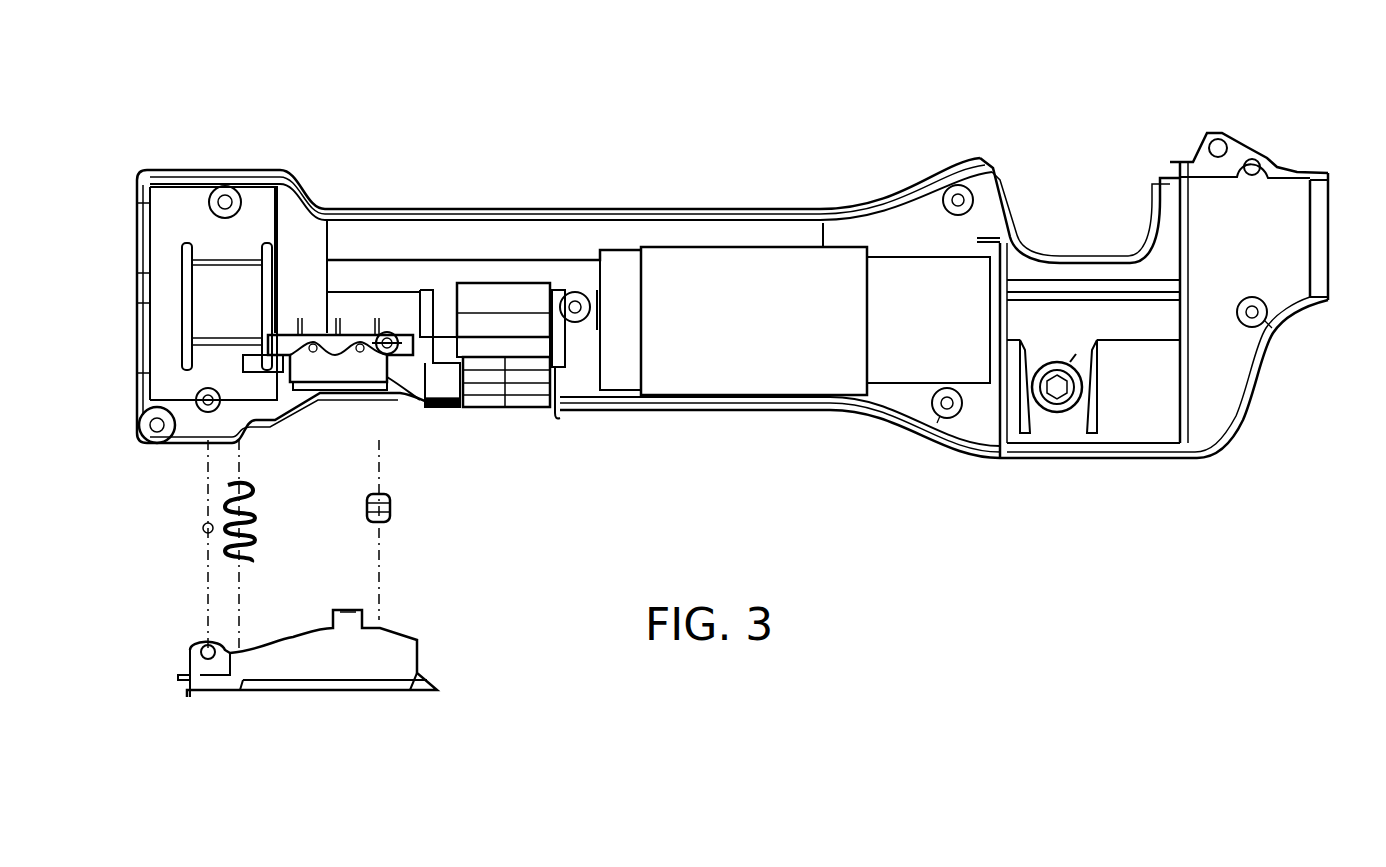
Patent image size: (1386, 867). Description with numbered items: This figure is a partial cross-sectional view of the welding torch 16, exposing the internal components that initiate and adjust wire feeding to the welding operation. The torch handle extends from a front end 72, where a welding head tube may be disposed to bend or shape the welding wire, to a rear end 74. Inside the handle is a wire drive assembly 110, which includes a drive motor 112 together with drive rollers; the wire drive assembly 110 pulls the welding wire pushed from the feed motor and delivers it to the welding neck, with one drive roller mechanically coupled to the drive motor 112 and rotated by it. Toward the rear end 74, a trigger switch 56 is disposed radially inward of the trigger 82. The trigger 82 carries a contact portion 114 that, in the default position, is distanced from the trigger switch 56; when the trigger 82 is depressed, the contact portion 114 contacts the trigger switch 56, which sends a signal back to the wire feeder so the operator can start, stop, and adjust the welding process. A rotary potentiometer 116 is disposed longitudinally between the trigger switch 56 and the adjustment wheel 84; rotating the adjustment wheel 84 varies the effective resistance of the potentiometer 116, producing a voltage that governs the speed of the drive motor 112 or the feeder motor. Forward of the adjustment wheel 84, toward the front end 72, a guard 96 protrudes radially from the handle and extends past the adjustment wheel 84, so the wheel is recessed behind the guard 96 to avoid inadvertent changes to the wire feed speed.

The welding torch 16 is at (955, 68).
The rear end 74 is at (137, 200).
The front end 72 is at (1330, 185).
The drive motor 112 is at (778, 334).
The wire drive assembly 110 is at (792, 428).
The trigger switch 56 is at (344, 392).
The rotary potentiometer 116 is at (440, 396).
The adjustment wheel 84 is at (502, 408).
The guard 96 is at (562, 414).
The contact portion 114 is at (392, 508).
The trigger 82 is at (312, 700).